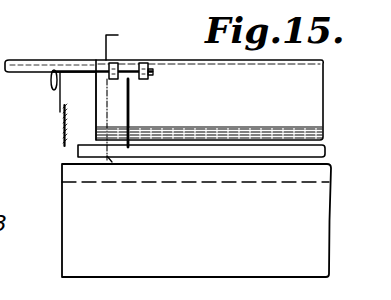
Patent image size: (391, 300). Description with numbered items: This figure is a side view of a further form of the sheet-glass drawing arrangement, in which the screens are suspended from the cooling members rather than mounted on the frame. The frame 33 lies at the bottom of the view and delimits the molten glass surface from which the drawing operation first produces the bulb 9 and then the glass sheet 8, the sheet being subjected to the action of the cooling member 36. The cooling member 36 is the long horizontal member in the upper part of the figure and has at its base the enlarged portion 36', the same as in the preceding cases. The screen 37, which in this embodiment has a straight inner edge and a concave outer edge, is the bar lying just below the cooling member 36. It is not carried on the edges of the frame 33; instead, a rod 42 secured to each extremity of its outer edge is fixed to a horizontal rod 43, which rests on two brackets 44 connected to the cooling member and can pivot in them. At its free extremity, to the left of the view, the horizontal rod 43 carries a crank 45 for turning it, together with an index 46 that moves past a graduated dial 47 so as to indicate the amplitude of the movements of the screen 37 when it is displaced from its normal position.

The cooling member 36 is at (181, 82).
The enlarged portion 36' is at (209, 116).
The glass sheet 8 is at (106, 41).
The horizontal rod 43 is at (89, 74).
The bracket 44 is at (113, 65).
The crank 45 is at (50, 87).
The index 46 is at (58, 107).
The graduated dial 47 is at (62, 125).
The rod 42 is at (130, 100).
The screen 37 is at (312, 153).
The bulb 9 is at (108, 161).
The frame 33 is at (80, 225).